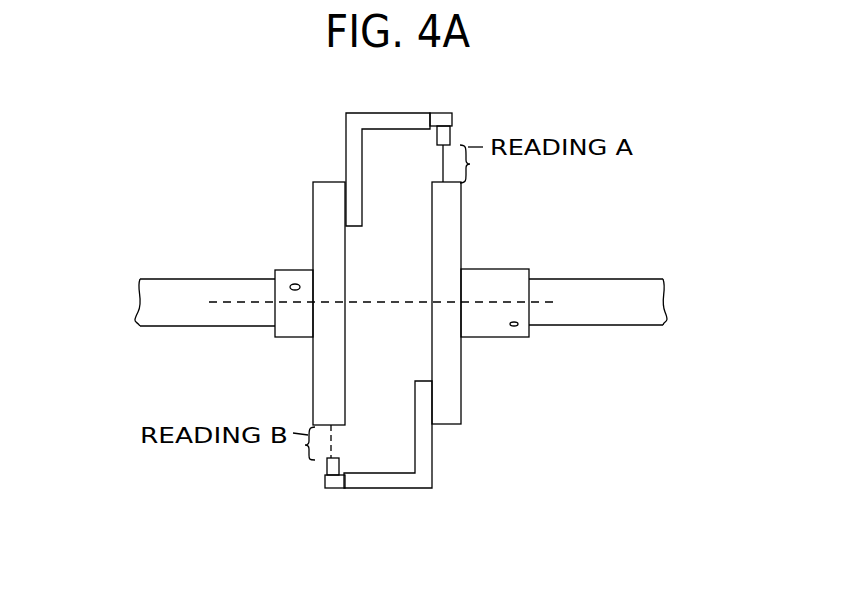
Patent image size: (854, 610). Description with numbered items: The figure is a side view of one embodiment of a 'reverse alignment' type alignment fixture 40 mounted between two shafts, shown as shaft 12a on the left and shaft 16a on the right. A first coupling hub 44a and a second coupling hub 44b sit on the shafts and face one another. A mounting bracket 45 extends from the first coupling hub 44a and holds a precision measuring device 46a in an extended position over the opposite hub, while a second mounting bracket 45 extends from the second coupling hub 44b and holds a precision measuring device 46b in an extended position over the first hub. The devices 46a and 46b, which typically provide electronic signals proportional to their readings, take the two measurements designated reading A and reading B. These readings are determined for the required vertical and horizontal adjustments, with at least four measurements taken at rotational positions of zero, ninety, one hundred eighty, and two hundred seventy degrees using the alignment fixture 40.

The alignment fixture 40 is at (612, 482).
The input shaft 12a is at (140, 312).
The output shaft 16a is at (655, 300).
The first coupling hub 44a is at (320, 223).
The second coupling hub 44b is at (455, 372).
The mounting bracket 45 is at (352, 151).
The precision measuring device 46a is at (453, 132).
The precision measuring device 46b is at (323, 468).